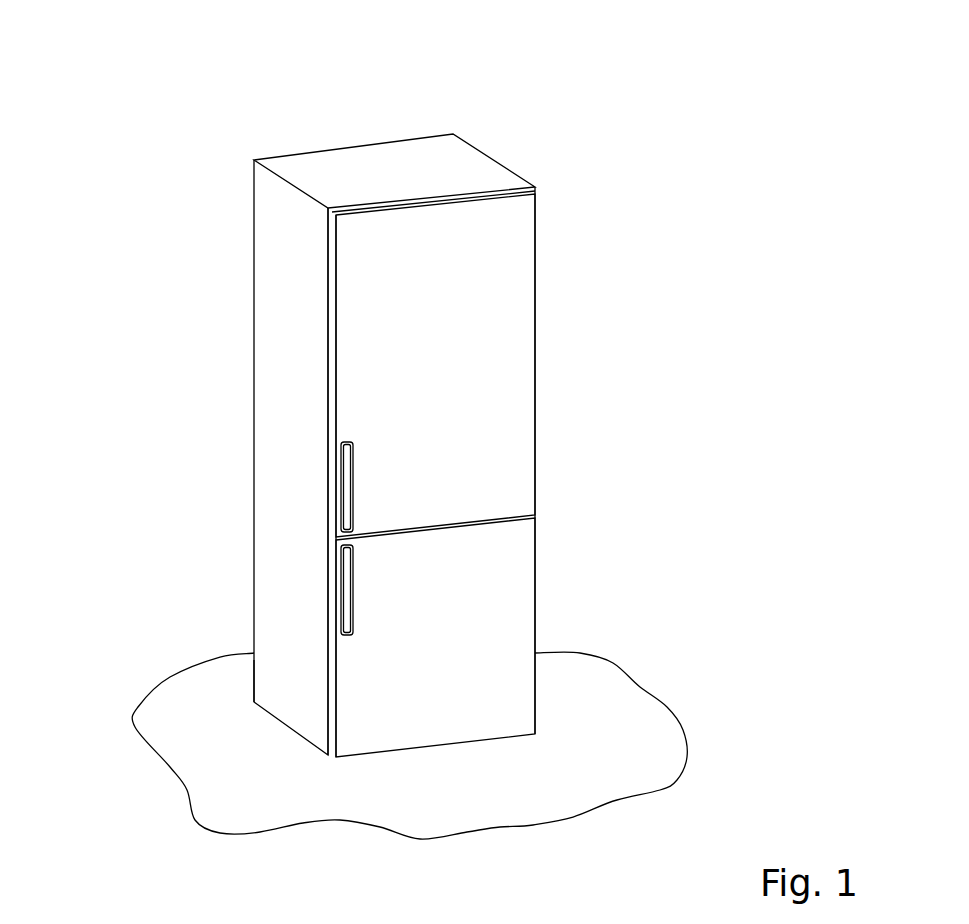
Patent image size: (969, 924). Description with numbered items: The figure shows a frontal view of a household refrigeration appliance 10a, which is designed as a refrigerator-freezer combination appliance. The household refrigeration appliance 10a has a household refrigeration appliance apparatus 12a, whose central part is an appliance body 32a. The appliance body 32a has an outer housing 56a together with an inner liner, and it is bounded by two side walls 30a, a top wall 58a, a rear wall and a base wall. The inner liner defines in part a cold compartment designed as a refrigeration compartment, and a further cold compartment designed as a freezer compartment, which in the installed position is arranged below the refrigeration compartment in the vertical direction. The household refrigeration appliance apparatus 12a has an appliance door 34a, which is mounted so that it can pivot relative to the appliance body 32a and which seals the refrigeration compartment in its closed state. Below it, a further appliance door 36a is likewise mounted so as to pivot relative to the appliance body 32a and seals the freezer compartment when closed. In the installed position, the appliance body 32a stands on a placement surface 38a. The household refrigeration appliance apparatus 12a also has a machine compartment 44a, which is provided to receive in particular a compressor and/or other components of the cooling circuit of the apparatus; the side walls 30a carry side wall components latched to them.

The household refrigeration appliance 10a is at (612, 112).
The household refrigeration appliance apparatus 12a is at (182, 613).
The side wall 30a is at (287, 278).
The appliance body 32a is at (337, 140).
The appliance door 34a is at (500, 303).
The further appliance door 36a is at (503, 563).
The placement surface 38a is at (627, 733).
The machine compartment 44a is at (248, 683).
The outer housing 56a is at (287, 435).
The top wall 58a is at (412, 160).